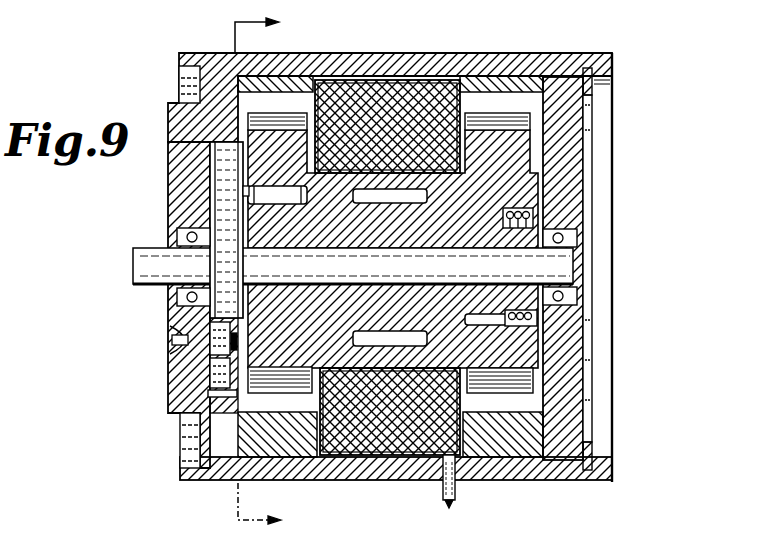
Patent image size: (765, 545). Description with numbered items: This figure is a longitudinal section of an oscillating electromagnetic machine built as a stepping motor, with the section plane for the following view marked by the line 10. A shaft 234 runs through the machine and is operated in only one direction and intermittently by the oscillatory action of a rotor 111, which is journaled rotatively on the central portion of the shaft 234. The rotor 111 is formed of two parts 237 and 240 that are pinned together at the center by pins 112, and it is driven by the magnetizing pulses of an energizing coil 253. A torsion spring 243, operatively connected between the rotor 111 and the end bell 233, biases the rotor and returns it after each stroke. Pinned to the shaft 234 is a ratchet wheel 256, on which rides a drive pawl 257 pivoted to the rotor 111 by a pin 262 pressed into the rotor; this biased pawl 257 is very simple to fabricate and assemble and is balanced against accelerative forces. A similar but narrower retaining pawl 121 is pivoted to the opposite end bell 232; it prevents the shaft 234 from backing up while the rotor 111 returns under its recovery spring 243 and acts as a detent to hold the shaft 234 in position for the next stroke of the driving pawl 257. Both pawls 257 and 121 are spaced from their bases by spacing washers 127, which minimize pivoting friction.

The section line 10- 10 is at (273, 274).
The rotor 111 is at (548, 364).
The pins 112 is at (362, 333).
The retaining pawl 121 is at (255, 352).
The spacing washers 127 is at (243, 193).
The end bell 232 is at (188, 400).
The end bell 233 is at (580, 344).
The shaft 234 is at (136, 273).
The rotor part 237 is at (262, 352).
The rotor part 240 is at (522, 163).
The torsion spring 243 is at (532, 216).
The energizing coil 253 is at (398, 88).
The ratchet wheel 256 is at (176, 289).
The drive pawl 257 is at (232, 160).
The pin 262 is at (275, 204).